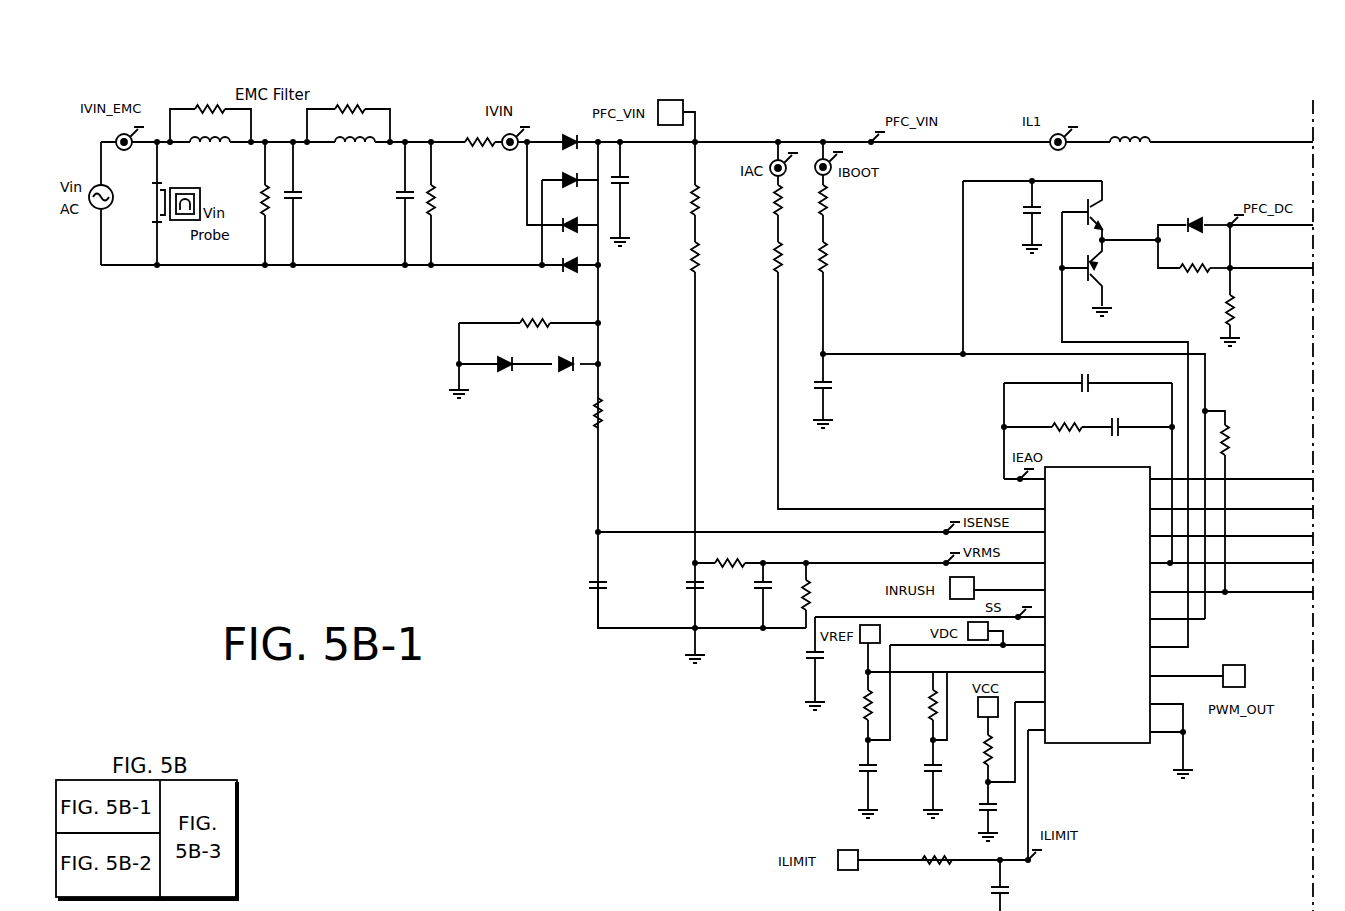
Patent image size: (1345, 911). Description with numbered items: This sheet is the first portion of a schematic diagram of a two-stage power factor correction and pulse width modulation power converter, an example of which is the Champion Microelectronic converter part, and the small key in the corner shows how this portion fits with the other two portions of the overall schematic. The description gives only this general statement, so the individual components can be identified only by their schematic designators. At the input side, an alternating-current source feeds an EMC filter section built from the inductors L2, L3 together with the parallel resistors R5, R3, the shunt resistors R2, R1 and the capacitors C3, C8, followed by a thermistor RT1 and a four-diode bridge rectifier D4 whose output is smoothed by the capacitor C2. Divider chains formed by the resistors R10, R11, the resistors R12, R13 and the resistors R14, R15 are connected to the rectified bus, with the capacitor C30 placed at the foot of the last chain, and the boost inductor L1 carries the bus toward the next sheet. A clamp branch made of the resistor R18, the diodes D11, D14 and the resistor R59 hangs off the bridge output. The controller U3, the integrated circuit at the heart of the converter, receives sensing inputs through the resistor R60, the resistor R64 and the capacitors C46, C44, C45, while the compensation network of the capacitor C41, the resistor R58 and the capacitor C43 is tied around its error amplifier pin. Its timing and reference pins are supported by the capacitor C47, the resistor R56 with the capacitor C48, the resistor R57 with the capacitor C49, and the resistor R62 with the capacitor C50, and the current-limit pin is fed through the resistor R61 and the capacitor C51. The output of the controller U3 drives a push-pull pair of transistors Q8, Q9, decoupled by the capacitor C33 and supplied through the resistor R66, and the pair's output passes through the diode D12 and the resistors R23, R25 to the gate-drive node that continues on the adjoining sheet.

The resistor R5 is at (210, 125).
The inductor L2 is at (210, 150).
The resistor R3 is at (348, 125).
The inductor L3 is at (355, 150).
The resistor R2 is at (253, 203).
The capacitor C3 is at (301, 203).
The capacitor C8 is at (392, 203).
The resistor R1 is at (441, 203).
The thermistor RT1 is at (478, 154).
The bridge rectifier diodes D4 is at (562, 371).
The capacitor C2 is at (629, 192).
The resistor R10 is at (677, 192).
The resistor R11 is at (677, 435).
The resistor R12 is at (763, 213).
The resistor R13 is at (895, 375).
The resistor R14 is at (841, 213).
The resistor R15 is at (841, 312).
The capacitor C30 is at (836, 389).
The boost inductor L1 is at (1130, 153).
The resistor R66 is at (1243, 510).
The capacitor C33 is at (1032, 215).
The NPN transistor Q2N2222 Q8 is at (1112, 210).
The PNP transistor Q2N2904 Q9 is at (1112, 278).
The diode 1N4148 D12 is at (1201, 226).
The resistor R23 is at (1205, 279).
The resistor R25 is at (1243, 317).
The resistor R18 is at (530, 332).
The diode 1N4002 D11 is at (500, 367).
The diode 1N4002 D14 is at (572, 367).
The resistor R59 is at (614, 413).
The resistor R60 is at (730, 553).
The capacitor C46 is at (682, 602).
The capacitor C44 is at (679, 620).
The capacitor C45 is at (749, 595).
The resistor R64 is at (822, 594).
The capacitor C47 is at (797, 663).
The resistor R56 is at (851, 727).
The capacitor C48 is at (851, 791).
The resistor R57 is at (921, 718).
The capacitor C49 is at (915, 791).
The resistor R62 is at (972, 769).
The capacitor C50 is at (975, 822).
The resistor R61 is at (937, 862).
The capacitor C51 is at (1015, 884).
The capacitor C41 is at (1088, 463).
The resistor R58 is at (1056, 418).
The capacitor C43 is at (1137, 419).
The PFC/PWM controller CM6900A U3 is at (1097, 628).